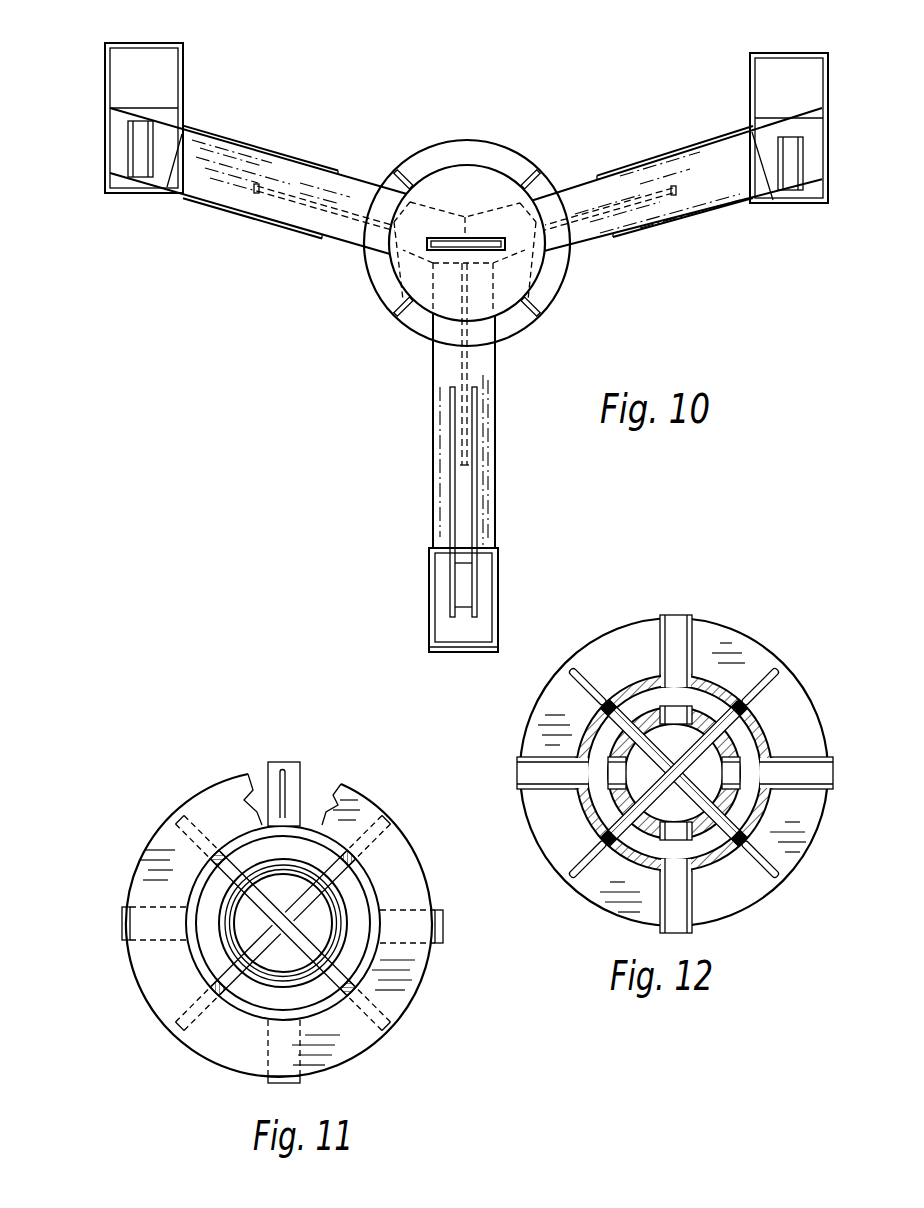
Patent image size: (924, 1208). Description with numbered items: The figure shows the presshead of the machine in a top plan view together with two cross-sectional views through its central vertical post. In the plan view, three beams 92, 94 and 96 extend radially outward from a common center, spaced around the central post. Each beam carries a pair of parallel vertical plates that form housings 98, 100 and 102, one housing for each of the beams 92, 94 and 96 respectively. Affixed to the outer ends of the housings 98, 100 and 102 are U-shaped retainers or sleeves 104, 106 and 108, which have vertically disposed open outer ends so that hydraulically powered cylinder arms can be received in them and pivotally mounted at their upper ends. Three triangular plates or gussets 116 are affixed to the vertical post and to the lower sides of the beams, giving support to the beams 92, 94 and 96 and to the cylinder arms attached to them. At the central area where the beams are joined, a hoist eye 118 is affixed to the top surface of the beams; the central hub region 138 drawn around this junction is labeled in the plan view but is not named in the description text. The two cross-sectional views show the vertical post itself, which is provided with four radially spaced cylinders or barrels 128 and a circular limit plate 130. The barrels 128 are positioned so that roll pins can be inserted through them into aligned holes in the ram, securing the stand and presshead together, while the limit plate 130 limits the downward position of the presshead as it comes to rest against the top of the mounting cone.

In FIG. 10, the radially extending beam 92 is at (492, 363).
In FIG. 10, the radially extending beam 94 is at (695, 177).
In FIG. 10, the radially extending beam 96 is at (277, 207).
In FIG. 10, the housing 98 is at (478, 462).
In FIG. 10, the housing 100 is at (725, 212).
In FIG. 10, the housing 102 is at (247, 153).
In FIG. 10, the U-shaped retainer or sleeve 104 is at (476, 628).
In FIG. 10, the U-shaped retainer or sleeve 106 is at (775, 91).
In FIG. 10, the U-shaped retainer or sleeve 108 is at (135, 70).
In FIG. 10, the triangular plate or gusset 116 is at (600, 184).
In FIG. 10, the hoist eye 118 is at (476, 243).
In FIG. 10, the central hub 138 is at (462, 152).
In FIG. 11, the cylinder or barrel 128 is at (275, 778).
In FIG. 12, the cylinder or barrel 128 is at (696, 630).
In FIG. 11, the circular limit plate 130 is at (168, 978).
In FIG. 12, the circular limit plate 130 is at (790, 708).